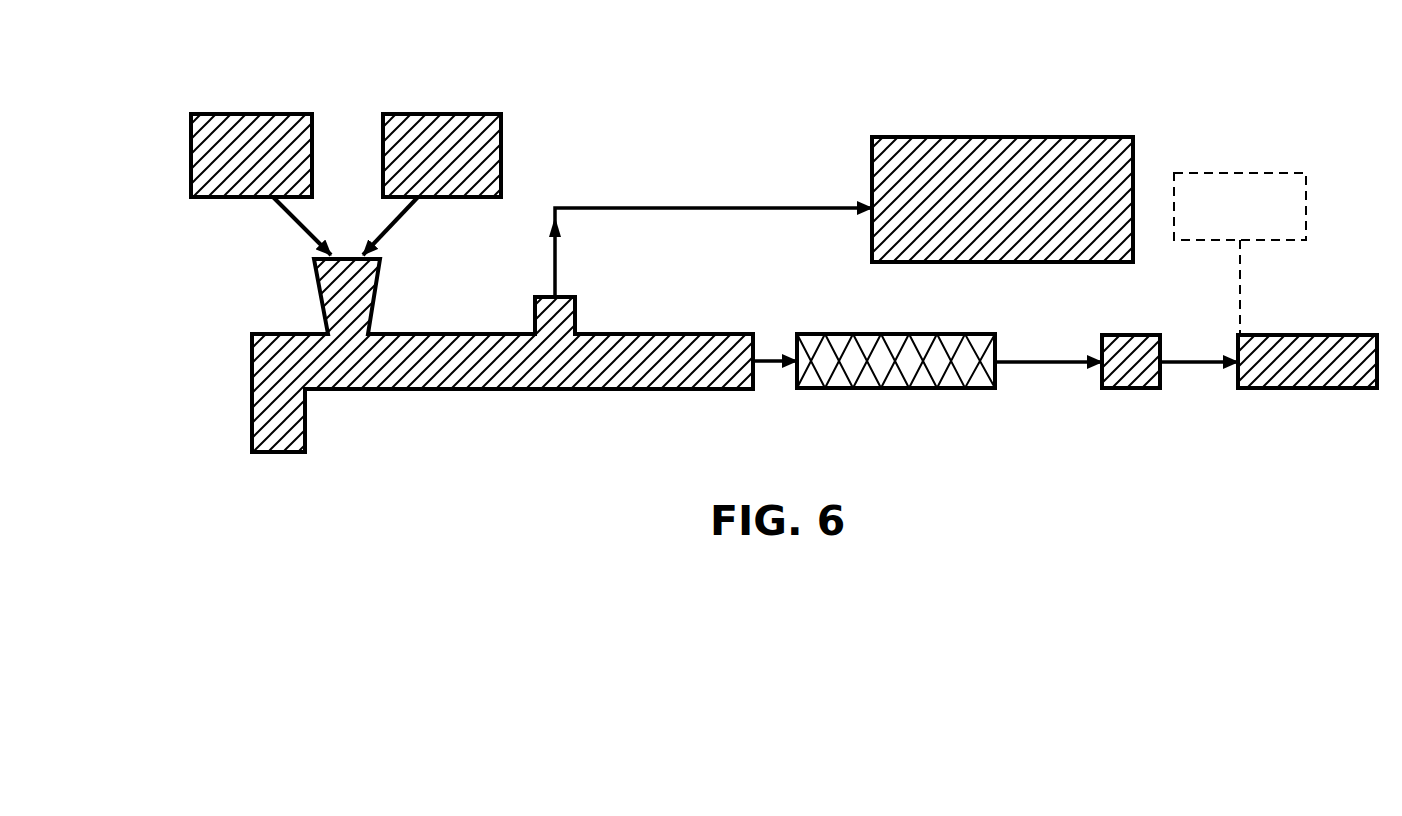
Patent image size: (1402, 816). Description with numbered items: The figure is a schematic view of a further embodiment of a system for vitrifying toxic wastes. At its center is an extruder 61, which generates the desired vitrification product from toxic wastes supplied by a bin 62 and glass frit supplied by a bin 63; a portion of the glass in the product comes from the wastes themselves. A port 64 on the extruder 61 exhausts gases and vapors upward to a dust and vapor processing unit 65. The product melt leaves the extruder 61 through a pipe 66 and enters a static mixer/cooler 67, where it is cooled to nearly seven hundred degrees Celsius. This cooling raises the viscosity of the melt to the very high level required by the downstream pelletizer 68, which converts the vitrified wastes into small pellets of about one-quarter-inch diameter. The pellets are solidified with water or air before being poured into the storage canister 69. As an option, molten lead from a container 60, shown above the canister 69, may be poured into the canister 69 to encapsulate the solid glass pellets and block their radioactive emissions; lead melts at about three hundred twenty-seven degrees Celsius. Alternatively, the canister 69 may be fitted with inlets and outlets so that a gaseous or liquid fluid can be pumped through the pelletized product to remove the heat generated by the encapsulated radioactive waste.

The container 60 is at (1285, 207).
The extruder 61 is at (400, 332).
The bin 62 is at (262, 145).
The bin 63 is at (422, 145).
The port 64 is at (570, 298).
The dust and vapor processing unit 65 is at (890, 175).
The pipe 66 is at (768, 352).
The static mixer/cooler 67 is at (877, 358).
The pelletizer 68 is at (1130, 355).
The storage canister 69 is at (1310, 358).